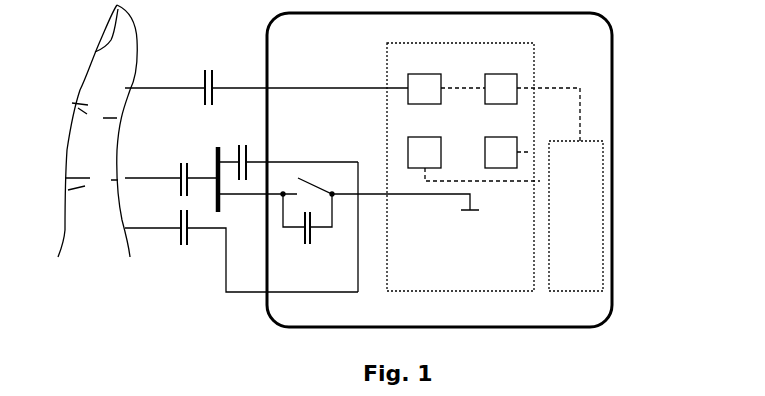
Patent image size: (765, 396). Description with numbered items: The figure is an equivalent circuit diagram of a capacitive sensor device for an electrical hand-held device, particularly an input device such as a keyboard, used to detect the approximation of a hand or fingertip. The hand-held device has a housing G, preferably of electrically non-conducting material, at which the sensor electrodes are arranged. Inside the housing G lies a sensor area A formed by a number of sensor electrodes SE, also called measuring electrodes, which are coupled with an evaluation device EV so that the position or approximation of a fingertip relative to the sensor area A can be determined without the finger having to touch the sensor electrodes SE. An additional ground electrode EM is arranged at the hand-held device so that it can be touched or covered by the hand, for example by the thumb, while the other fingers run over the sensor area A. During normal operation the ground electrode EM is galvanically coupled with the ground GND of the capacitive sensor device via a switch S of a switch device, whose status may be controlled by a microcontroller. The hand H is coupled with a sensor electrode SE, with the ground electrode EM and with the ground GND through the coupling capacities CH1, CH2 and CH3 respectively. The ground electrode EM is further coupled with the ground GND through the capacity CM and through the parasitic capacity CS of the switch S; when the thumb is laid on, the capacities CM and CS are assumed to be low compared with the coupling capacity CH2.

The hand H is at (99, 73).
The coupling capacity between hand and measuring electrode CH1 is at (196, 71).
The coupling capacity between hand and ground electrode CH2 is at (171, 169).
The coupling capacity between hand and ground CH3 is at (241, 251).
The ground electrode EM is at (204, 171).
The capacity between ground electrode and ground CM is at (288, 156).
The switch S is at (319, 227).
The parasitic capacity of the switch CS is at (307, 232).
The ground GND is at (422, 215).
The housing G is at (612, 141).
The sensor area A is at (518, 121).
The sensor electrodes SE is at (520, 74).
The evaluation device EV is at (576, 216).